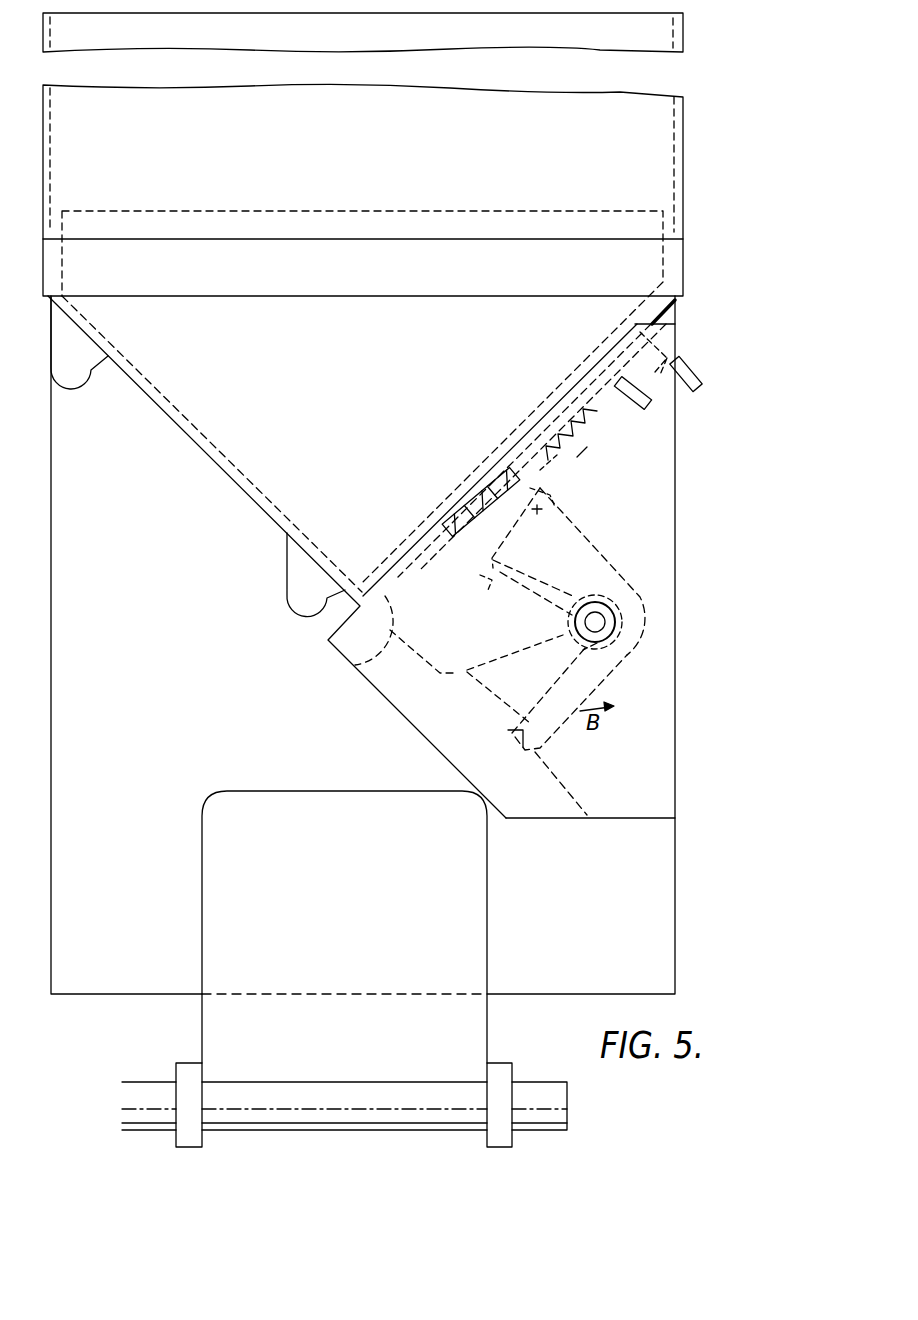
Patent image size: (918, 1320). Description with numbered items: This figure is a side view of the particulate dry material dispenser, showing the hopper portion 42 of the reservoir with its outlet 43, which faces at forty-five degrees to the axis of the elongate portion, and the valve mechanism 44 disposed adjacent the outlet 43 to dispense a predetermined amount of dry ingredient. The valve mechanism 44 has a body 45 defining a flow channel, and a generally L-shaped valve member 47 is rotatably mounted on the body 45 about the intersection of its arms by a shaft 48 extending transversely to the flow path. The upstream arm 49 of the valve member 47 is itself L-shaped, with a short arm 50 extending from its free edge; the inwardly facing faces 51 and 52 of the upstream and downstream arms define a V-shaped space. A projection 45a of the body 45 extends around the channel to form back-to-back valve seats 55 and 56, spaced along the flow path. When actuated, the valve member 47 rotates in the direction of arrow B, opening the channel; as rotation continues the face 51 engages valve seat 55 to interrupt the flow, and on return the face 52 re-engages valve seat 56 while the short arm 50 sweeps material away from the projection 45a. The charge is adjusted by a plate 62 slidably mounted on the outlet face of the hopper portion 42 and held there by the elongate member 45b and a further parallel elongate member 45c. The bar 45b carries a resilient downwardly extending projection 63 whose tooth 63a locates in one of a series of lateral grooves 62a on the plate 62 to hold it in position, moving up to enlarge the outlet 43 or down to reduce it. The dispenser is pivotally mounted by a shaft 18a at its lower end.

The shaft 18a is at (565, 1100).
The hopper portion 42 is at (252, 497).
The outlet 43 is at (352, 668).
The valve mechanism 44 is at (637, 588).
The body 45 is at (455, 726).
The projection 45a is at (505, 662).
The elongate member 45b is at (648, 403).
The further parallel elongate member 45c is at (472, 515).
The valve member 47 is at (591, 541).
The shaft 48 is at (603, 622).
The upstream arm 49 is at (518, 568).
The short arm 50 is at (542, 508).
The inwardly facing face 51 is at (490, 582).
The inwardly facing face 52 is at (552, 702).
The valve seat 55 is at (453, 673).
The valve seat 56 is at (525, 752).
The plate 62 is at (675, 360).
The lateral grooves 62a is at (557, 462).
The projection 63 is at (607, 420).
The tooth 63a is at (587, 447).